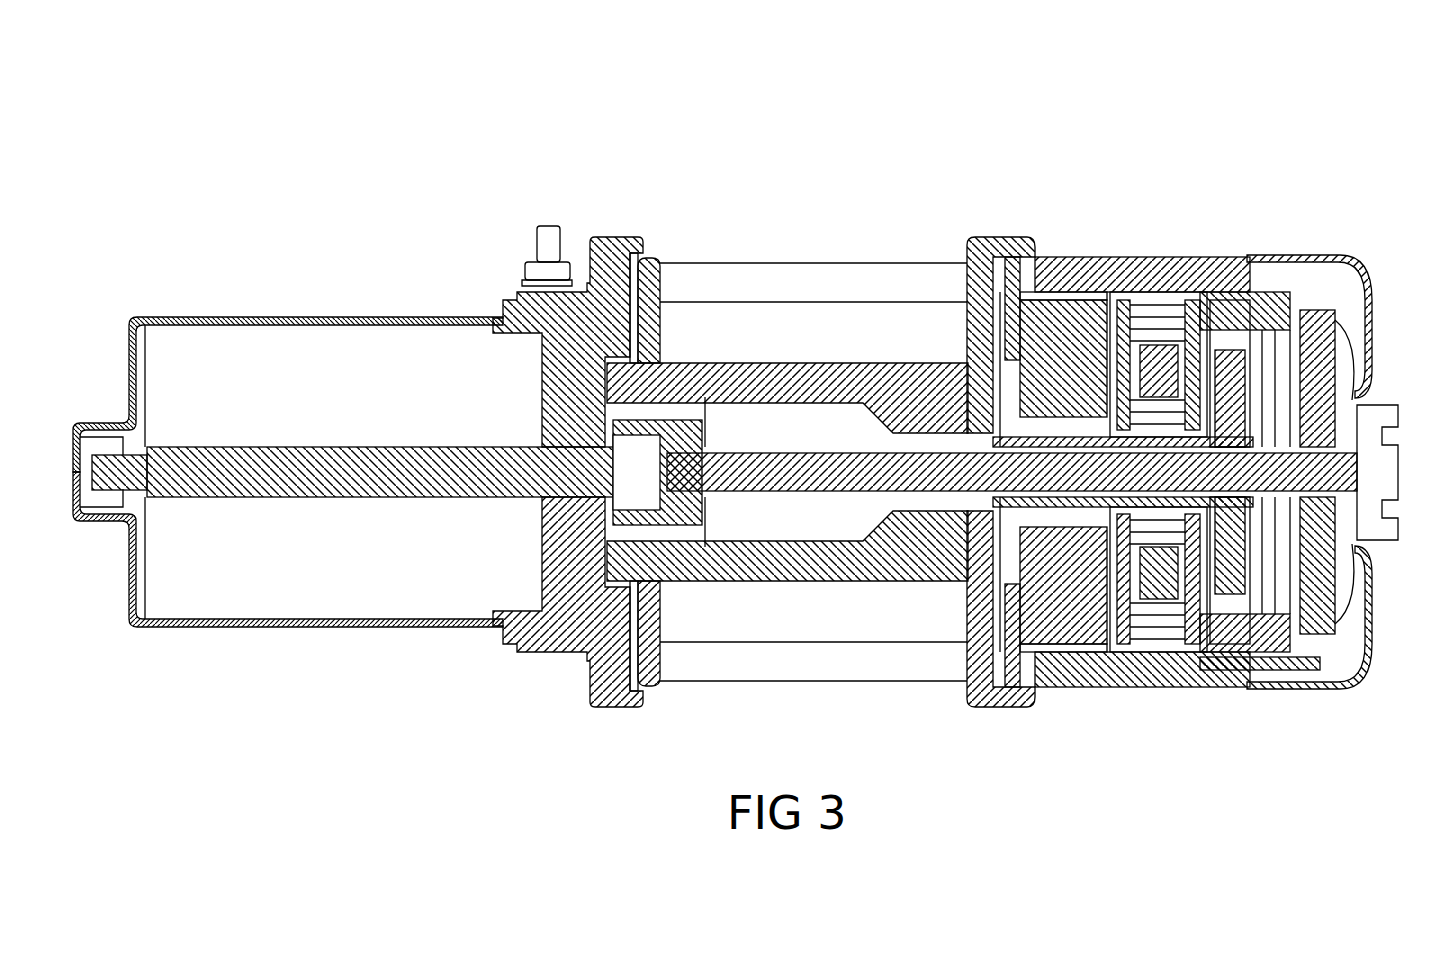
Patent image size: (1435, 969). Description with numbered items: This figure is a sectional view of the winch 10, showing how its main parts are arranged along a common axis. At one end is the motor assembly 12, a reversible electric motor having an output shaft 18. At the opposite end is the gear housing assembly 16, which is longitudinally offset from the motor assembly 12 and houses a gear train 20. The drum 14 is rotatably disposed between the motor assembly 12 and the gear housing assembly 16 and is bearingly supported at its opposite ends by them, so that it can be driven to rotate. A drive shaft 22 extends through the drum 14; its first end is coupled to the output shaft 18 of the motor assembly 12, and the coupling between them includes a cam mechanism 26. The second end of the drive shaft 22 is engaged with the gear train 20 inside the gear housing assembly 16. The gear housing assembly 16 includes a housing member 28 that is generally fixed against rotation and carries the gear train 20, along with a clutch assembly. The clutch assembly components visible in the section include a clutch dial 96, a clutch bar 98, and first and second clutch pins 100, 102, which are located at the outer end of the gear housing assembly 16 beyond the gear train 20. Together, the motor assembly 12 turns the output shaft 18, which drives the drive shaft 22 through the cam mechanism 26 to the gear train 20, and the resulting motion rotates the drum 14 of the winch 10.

The winch 10 is at (1036, 145).
The motor assembly 12 is at (346, 292).
The drum 14 is at (852, 340).
The gear housing assembly 16 is at (1142, 235).
The output shaft 18 is at (492, 497).
The gear train 20 is at (1285, 255).
The drive shaft 22 is at (915, 490).
The cam mechanism 26 is at (676, 400).
The housing member 28 is at (1160, 265).
The clutch dial 96 is at (1370, 394).
The clutch bar 98 is at (1370, 335).
The first clutch pin 100 is at (1262, 668).
The second clutch pin 102 is at (1290, 268).